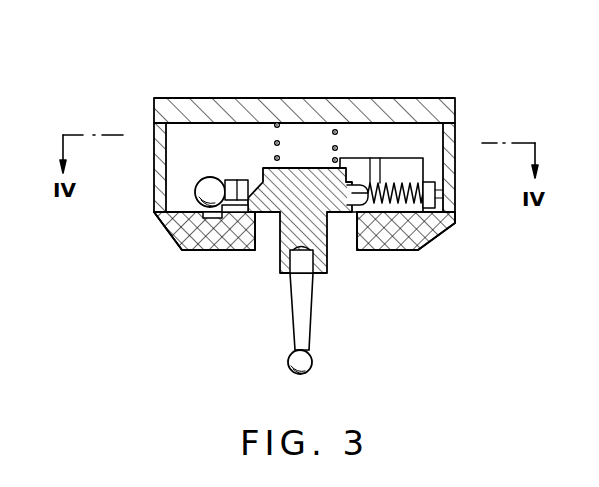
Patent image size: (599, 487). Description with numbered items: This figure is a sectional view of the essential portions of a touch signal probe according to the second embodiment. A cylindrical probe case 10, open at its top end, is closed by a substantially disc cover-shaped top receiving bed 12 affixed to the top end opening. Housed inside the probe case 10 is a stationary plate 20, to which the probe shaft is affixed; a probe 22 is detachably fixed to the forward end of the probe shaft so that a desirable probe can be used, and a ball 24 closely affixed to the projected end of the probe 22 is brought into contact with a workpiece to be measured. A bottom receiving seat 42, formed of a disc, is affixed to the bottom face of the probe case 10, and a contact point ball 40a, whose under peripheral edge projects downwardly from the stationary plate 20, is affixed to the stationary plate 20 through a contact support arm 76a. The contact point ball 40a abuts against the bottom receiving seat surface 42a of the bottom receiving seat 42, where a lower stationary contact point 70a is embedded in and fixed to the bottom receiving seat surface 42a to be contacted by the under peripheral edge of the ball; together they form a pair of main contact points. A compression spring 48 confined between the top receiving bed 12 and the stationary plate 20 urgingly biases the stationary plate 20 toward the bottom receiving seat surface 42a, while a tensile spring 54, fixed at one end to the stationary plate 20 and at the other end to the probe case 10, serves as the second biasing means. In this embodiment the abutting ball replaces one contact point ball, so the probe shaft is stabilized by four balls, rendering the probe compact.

The probe case 10 is at (455, 163).
The top receiving bed 12 is at (324, 110).
The stationary plate 20 is at (263, 173).
The probe 22 is at (305, 305).
The ball 24 is at (312, 358).
The contact point ball 40a is at (207, 180).
The bottom receiving seat 42 is at (397, 242).
The bottom receiving seat surface 42a is at (174, 210).
The compression spring 48 is at (273, 143).
The tensile spring 54 is at (396, 182).
The lower stationary contact point 70a is at (210, 219).
The contact support arm 76a is at (237, 214).